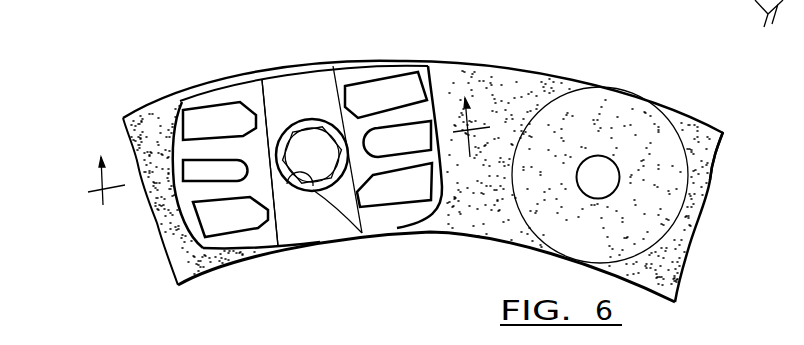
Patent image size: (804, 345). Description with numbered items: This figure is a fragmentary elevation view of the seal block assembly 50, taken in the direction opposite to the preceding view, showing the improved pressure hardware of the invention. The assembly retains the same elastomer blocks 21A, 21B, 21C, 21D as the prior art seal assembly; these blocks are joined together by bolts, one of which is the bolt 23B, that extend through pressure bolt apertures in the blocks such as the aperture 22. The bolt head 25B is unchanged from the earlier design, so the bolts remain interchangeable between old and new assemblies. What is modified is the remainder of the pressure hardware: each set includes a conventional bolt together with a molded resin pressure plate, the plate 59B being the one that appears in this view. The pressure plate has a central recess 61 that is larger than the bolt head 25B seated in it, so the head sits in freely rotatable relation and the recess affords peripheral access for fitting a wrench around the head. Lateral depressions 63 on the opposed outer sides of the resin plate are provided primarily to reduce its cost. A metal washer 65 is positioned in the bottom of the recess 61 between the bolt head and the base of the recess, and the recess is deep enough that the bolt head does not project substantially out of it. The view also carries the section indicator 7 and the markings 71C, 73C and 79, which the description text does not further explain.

The seal block assembly 50 is at (488, 53).
The elastomer block 21A is at (685, 133).
The elastomer block 21B is at (540, 90).
The elastomer block 21C is at (185, 262).
The elastomer block 21D is at (738, 0).
The pressure bolt aperture 22 is at (600, 170).
The bolt 23B is at (320, 128).
The bolt head 25B is at (293, 110).
The molded resin pressure plate 59B is at (258, 238).
The central recess 61 is at (362, 233).
The lateral depression 63 is at (202, 172).
The metal washer 65 is at (318, 147).
The section line 7- 7 is at (284, 158).
The member 73C is at (665, 14).
The member 71C is at (625, 5).
The connector 79 is at (769, 29).